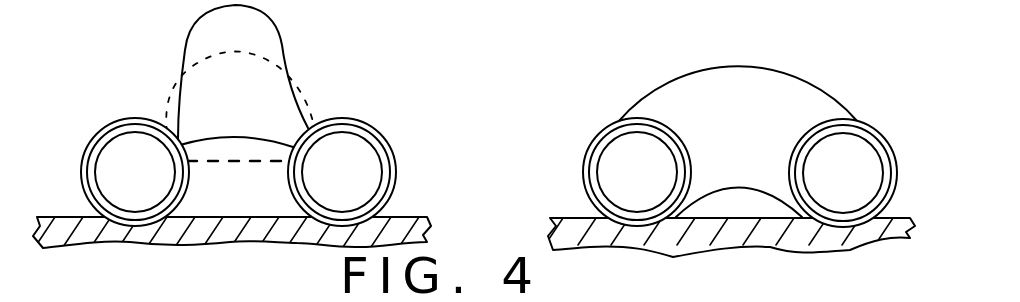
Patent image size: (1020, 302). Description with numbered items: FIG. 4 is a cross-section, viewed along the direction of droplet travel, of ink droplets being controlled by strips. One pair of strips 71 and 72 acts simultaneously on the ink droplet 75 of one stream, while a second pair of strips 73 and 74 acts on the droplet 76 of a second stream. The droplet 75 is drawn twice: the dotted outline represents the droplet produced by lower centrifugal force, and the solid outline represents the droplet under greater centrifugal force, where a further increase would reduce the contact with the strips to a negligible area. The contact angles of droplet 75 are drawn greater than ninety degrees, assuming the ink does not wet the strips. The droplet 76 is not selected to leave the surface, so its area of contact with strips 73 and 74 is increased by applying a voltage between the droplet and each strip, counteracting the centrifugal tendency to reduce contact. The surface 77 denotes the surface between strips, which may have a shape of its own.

The strip 71 is at (135, 172).
The strip 72 is at (342, 172).
The strip 73 is at (637, 172).
The strip 74 is at (843, 173).
The droplet 75 is at (239, 76).
The droplet 76 is at (738, 106).
The surface between strips 77 is at (257, 215).